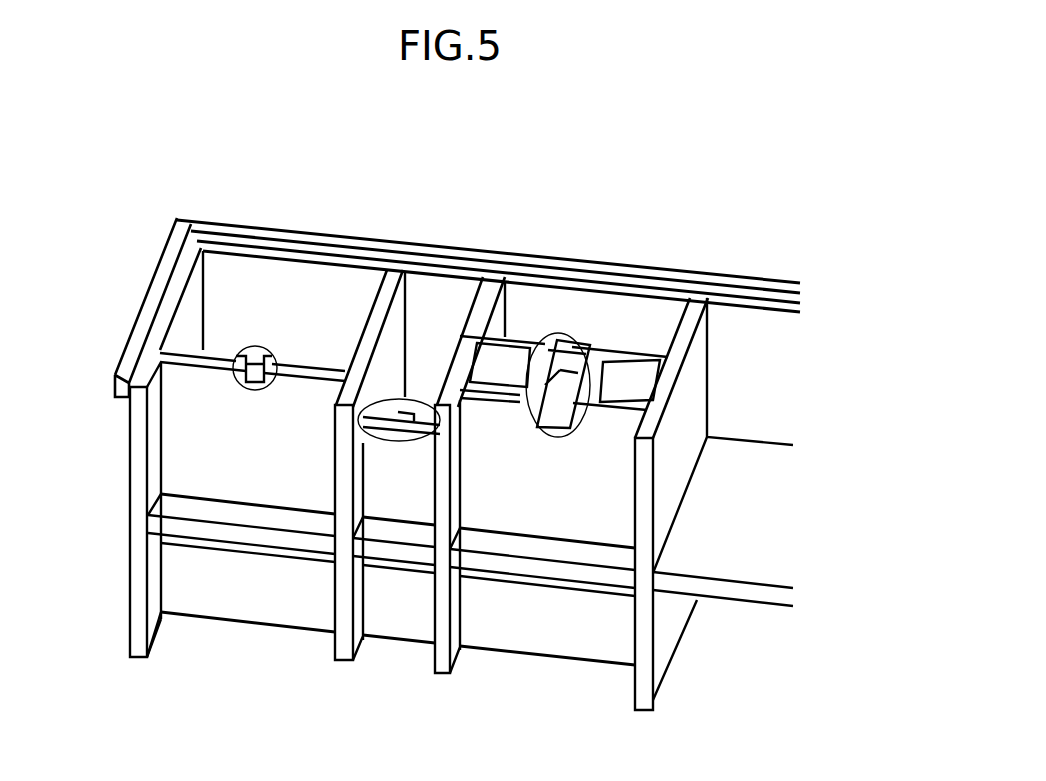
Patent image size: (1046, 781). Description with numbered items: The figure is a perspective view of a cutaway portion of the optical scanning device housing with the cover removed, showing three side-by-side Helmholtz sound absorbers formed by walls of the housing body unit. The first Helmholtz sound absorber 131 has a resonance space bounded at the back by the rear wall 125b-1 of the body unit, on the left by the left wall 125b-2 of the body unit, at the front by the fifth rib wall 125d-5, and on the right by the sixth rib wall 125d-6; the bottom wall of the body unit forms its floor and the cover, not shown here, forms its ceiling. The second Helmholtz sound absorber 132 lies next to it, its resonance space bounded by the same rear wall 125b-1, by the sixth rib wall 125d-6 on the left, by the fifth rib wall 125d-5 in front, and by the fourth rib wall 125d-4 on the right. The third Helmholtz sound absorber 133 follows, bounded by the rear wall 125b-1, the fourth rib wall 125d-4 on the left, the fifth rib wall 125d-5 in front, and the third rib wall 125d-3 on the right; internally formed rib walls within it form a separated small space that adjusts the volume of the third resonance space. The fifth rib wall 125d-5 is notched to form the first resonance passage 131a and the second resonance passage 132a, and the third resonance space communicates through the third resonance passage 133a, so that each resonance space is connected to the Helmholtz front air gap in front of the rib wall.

The first Helmholtz sound absorber 131 is at (262, 272).
The second Helmholtz sound absorber 132 is at (442, 280).
The third Helmholtz sound absorber 133 is at (620, 305).
The first resonance passage 131a is at (270, 392).
The second resonance passage 132a is at (377, 440).
The third resonance passage 133a is at (560, 437).
The rear wall 125b-1 is at (730, 292).
The left wall 125b-2 is at (165, 320).
The third rib wall 125d-3 is at (665, 385).
The fourth rib wall 125d-4 is at (485, 300).
The fifth rib wall 125d-5 is at (198, 352).
The sixth rib wall 125d-6 is at (378, 262).